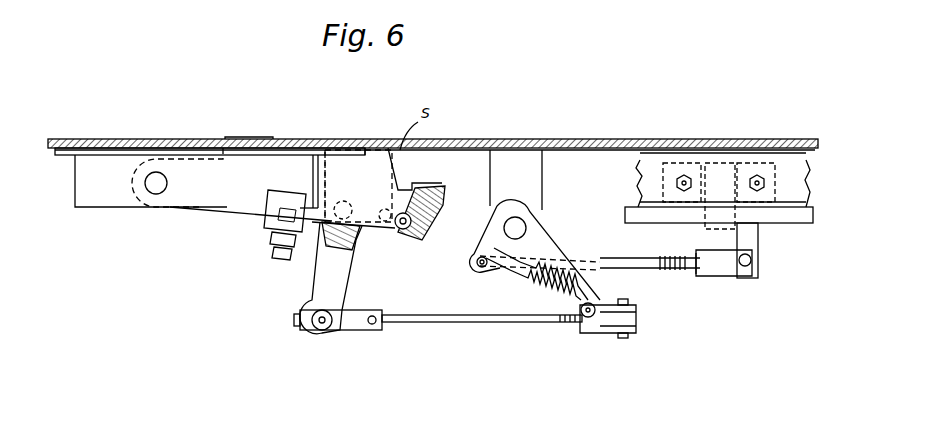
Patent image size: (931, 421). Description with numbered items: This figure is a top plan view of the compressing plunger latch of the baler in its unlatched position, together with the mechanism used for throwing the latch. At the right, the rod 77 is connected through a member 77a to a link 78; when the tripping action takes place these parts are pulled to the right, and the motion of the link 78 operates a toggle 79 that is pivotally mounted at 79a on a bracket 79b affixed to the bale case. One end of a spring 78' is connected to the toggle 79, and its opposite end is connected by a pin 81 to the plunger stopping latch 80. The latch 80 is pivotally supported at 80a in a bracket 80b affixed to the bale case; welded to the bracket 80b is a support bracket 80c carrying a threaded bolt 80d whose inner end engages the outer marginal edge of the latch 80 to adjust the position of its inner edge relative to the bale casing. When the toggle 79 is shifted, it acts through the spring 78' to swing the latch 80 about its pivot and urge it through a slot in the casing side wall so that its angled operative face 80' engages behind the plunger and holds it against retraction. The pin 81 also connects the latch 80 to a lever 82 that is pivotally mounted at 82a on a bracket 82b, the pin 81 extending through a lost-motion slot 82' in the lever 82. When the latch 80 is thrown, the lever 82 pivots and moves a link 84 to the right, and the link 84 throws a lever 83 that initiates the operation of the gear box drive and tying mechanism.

The rod 77 is at (784, 223).
The member 77a is at (758, 250).
The link 78 is at (616, 267).
The spring 78' is at (508, 282).
The toggle 79 is at (520, 208).
The pivot 79a is at (520, 228).
The bracket 79b is at (537, 172).
The plunger stopping latch 80 is at (353, 143).
The operative face 80' is at (403, 169).
The pivot 80a is at (158, 187).
The bracket 80b is at (120, 207).
The support bracket 80c is at (265, 215).
The threaded bolt 80d is at (278, 262).
The pin 81 is at (400, 235).
The lever 82 is at (301, 280).
The lost-motion slot 82' is at (358, 186).
The pivot 82a is at (318, 230).
The bracket 82b is at (322, 170).
The lever 83 is at (636, 323).
The link 84 is at (412, 325).